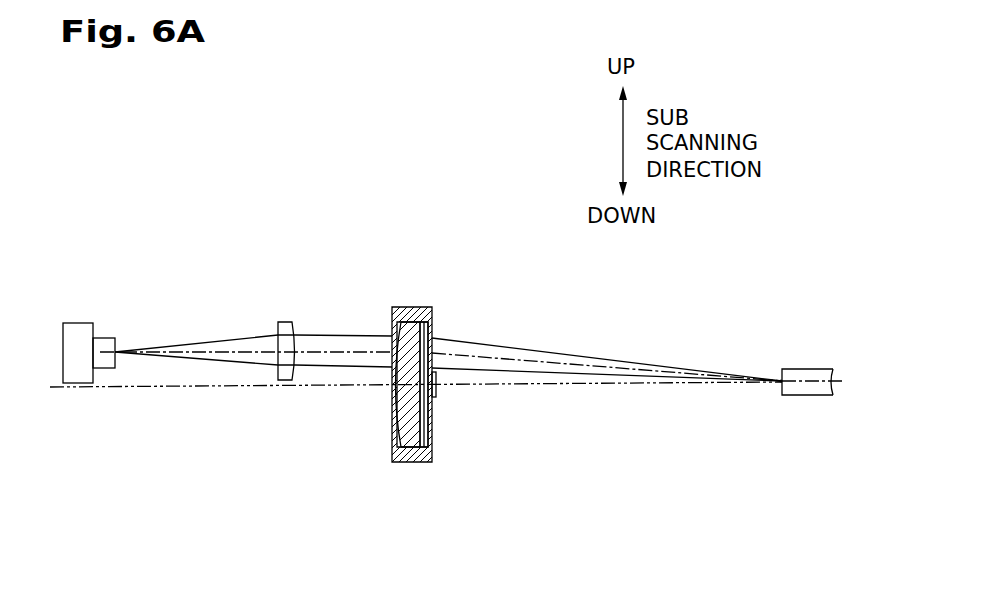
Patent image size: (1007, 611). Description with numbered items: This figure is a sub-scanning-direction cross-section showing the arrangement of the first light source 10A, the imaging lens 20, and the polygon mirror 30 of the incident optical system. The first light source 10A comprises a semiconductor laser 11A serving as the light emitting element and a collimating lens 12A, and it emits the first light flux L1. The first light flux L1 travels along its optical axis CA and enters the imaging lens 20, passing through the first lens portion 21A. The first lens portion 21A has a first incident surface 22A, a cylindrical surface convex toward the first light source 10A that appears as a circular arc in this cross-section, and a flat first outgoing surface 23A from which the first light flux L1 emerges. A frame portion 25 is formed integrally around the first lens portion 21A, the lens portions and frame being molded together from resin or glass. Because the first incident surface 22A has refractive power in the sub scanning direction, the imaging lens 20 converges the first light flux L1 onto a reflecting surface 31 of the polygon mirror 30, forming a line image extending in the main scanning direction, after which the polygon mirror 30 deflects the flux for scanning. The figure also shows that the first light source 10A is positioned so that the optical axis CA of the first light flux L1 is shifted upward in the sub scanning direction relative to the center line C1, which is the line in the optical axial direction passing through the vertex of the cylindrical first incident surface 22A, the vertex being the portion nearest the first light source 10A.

The first light source 10A is at (308, 252).
The semiconductor laser 11A is at (77, 343).
The collimating lens 12A is at (287, 323).
The first light flux L1 is at (314, 337).
The optical axis CA is at (356, 352).
The center line C1 is at (260, 387).
The imaging lens 20 is at (410, 287).
The first lens portion 21A is at (424, 405).
The first incident surface 22A is at (397, 423).
The first outgoing surface 23A is at (426, 423).
The frame portion 25 is at (422, 462).
The polygon mirror 30 is at (800, 369).
The reflecting surface 31 is at (782, 384).